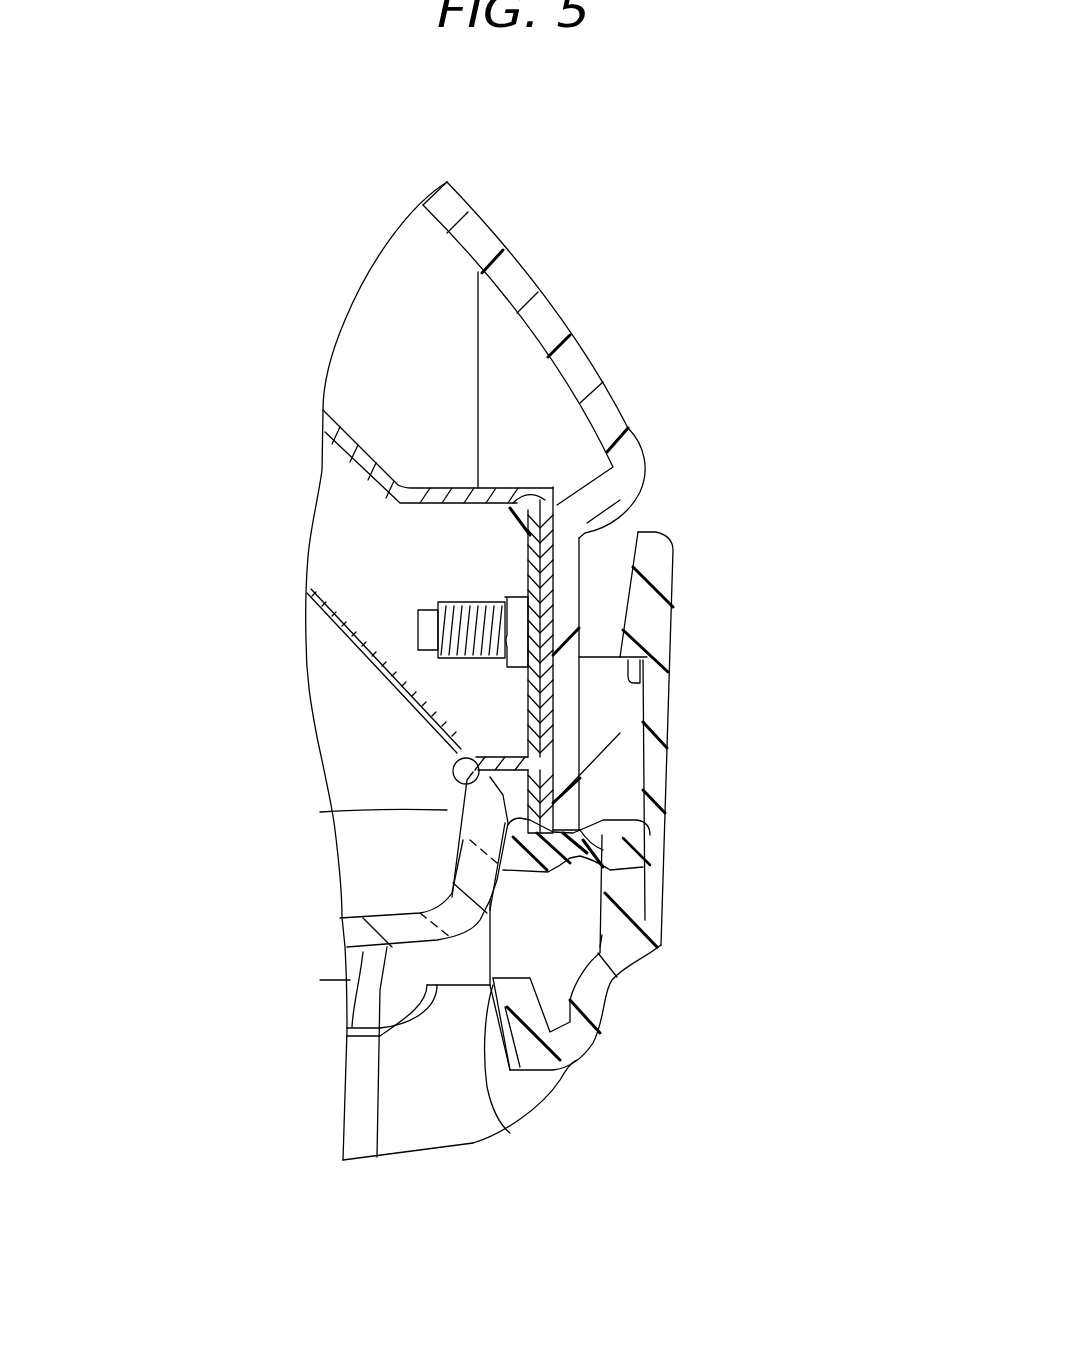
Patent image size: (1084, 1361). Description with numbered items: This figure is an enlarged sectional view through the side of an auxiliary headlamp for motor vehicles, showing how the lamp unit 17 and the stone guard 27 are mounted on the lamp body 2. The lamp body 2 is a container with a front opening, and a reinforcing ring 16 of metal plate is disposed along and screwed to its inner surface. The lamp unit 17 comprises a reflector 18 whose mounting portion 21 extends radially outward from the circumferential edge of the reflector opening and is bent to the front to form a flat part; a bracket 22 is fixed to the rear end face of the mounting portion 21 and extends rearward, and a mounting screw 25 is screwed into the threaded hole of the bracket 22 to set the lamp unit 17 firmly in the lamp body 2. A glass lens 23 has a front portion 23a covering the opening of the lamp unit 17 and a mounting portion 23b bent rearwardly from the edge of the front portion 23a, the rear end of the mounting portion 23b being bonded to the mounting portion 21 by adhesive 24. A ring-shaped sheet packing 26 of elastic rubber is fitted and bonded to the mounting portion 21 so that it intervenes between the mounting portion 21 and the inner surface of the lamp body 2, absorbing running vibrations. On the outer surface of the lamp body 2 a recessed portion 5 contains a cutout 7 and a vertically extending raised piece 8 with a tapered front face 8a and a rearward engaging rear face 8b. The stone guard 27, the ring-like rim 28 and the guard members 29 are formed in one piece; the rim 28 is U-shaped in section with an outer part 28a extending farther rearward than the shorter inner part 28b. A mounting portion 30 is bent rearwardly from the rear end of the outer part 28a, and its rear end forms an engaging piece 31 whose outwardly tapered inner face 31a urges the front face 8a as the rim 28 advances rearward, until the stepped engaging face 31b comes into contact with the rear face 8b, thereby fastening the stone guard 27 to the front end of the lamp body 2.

The lamp body 2 is at (493, 233).
The recessed portion 5 is at (588, 532).
The cutout 7 is at (620, 833).
The raised piece 8 is at (618, 690).
The front face 8a is at (618, 733).
The rear face 8b is at (672, 614).
The reinforcing ring 16 is at (366, 455).
The lamp unit 17 is at (433, 943).
The reflector 18 is at (345, 632).
The mounting portion 21 is at (467, 793).
The bracket 22 is at (528, 697).
The lens 23 is at (350, 955).
The front portion 23a is at (377, 1160).
The mounting portion 23b is at (430, 840).
The adhesive 24 is at (520, 842).
The mounting screw 25 is at (440, 625).
The sheet packing 26 is at (577, 860).
The stone guard 27 is at (617, 977).
The rim 28 is at (603, 1037).
The outer part 28a is at (660, 910).
The inner part 28b is at (505, 1130).
The guard member 29 is at (435, 1138).
The mounting portion 30 is at (670, 727).
The engaging piece 31 is at (625, 607).
The inner face 31a is at (628, 580).
The engaging face 31b is at (553, 730).